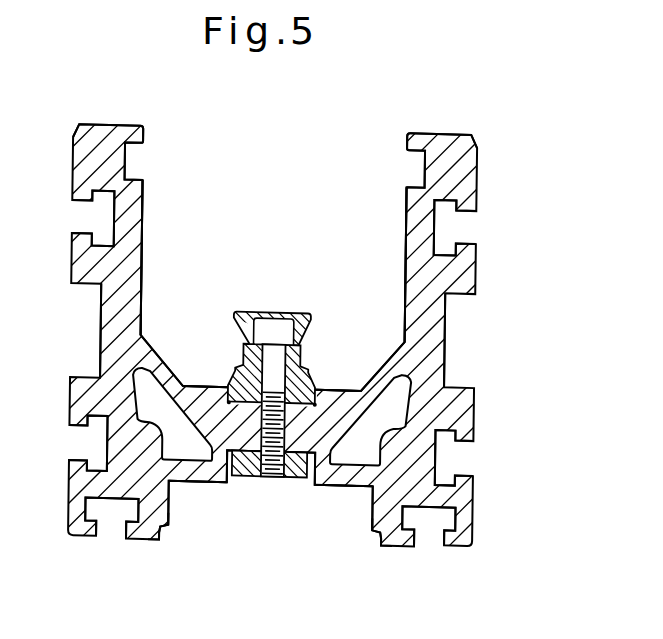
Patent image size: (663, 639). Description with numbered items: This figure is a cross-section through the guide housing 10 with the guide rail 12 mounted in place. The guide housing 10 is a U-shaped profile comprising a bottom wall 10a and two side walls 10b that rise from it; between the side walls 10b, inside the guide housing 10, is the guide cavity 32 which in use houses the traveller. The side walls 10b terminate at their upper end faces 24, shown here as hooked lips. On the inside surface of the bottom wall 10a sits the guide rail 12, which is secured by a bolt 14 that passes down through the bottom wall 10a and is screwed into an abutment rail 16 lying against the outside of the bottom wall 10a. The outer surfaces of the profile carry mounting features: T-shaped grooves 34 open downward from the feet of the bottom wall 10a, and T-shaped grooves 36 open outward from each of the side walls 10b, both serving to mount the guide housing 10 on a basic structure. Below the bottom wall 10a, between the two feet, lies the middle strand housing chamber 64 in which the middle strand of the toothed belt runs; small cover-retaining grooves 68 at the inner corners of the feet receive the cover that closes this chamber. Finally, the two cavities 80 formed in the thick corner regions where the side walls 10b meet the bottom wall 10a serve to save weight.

The guide housing 10 is at (496, 162).
The bottom wall 10a is at (322, 414).
The side walls 10b is at (108, 322).
The guide rail 12 is at (236, 311).
The bolts 14 is at (252, 422).
The abutment rail 16 is at (294, 478).
The end faces 24 is at (112, 124).
The guide cavity 32 is at (283, 218).
The T-shaped grooves 34 is at (113, 528).
The T-shaped grooves 36 is at (92, 218).
The middle strand housing chamber 64 is at (270, 490).
The cover-retaining grooves 68 is at (172, 528).
The cavities 80 is at (150, 385).